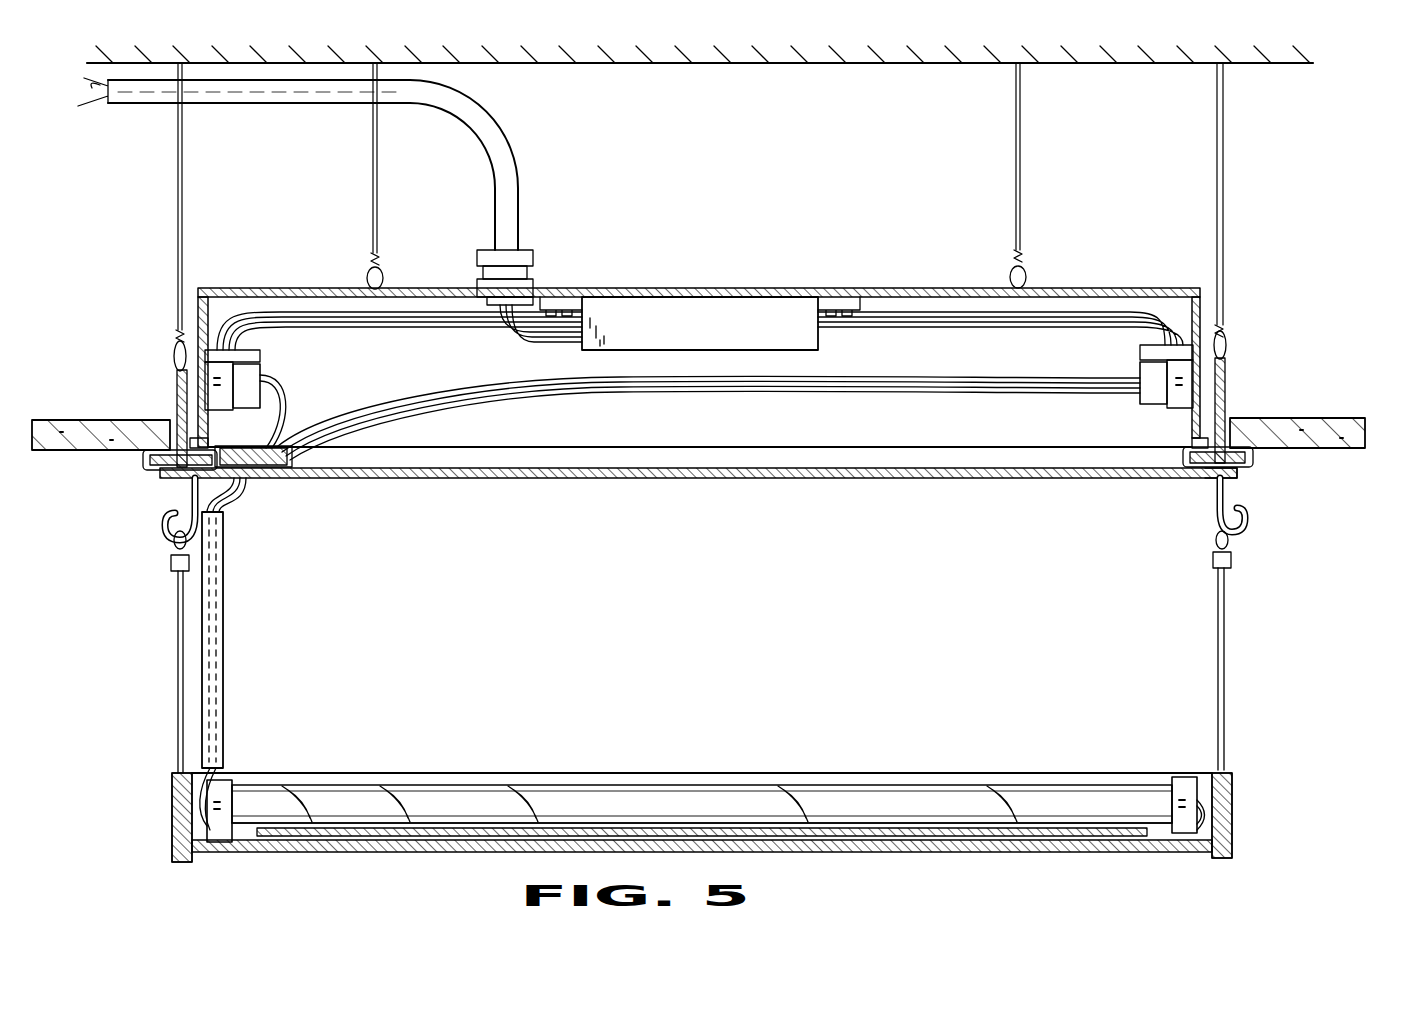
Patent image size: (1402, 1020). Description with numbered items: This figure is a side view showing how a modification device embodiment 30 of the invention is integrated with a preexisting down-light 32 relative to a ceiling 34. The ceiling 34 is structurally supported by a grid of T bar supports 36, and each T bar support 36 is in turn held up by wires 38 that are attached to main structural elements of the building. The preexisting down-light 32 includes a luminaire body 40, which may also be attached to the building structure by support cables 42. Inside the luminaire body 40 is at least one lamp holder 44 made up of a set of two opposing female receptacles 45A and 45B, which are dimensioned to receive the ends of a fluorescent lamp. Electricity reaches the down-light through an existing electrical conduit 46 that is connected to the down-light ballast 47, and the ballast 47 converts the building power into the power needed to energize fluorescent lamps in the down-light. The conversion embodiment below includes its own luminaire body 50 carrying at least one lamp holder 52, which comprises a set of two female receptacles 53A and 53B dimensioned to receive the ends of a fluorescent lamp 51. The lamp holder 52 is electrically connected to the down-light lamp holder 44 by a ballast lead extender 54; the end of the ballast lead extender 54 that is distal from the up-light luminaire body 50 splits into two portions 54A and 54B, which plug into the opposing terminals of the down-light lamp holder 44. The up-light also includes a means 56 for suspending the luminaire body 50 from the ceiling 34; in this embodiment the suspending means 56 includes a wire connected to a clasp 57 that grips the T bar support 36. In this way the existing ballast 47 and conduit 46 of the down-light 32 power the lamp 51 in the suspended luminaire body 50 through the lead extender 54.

The modification device embodiment 30 is at (1220, 867).
The preexisting down-light 32 is at (1268, 311).
The ceiling 34 is at (88, 440).
The T bar support 36 is at (1247, 470).
The wire 38 is at (1225, 160).
The luminaire body 40 is at (900, 288).
The support cable 42 is at (1022, 175).
The lamp holder 44 is at (215, 398).
The female receptacle 45A is at (700, 355).
The female receptacle 45B is at (1180, 405).
The electrical conduit 46 is at (318, 98).
The down-light ballast 47 is at (685, 297).
The luminaire body 50 is at (378, 855).
The fluorescent lamp 51 is at (553, 785).
The lamp holder 52 is at (215, 828).
The female receptacle 53A is at (225, 780).
The female receptacle 53B is at (1187, 777).
The ballast lead extender 54 is at (224, 600).
The ballast lead extender portion 54A is at (278, 388).
The ballast lead extender portion 54B is at (725, 392).
The suspending means 56 is at (178, 625).
The clasp 57 is at (1218, 480).